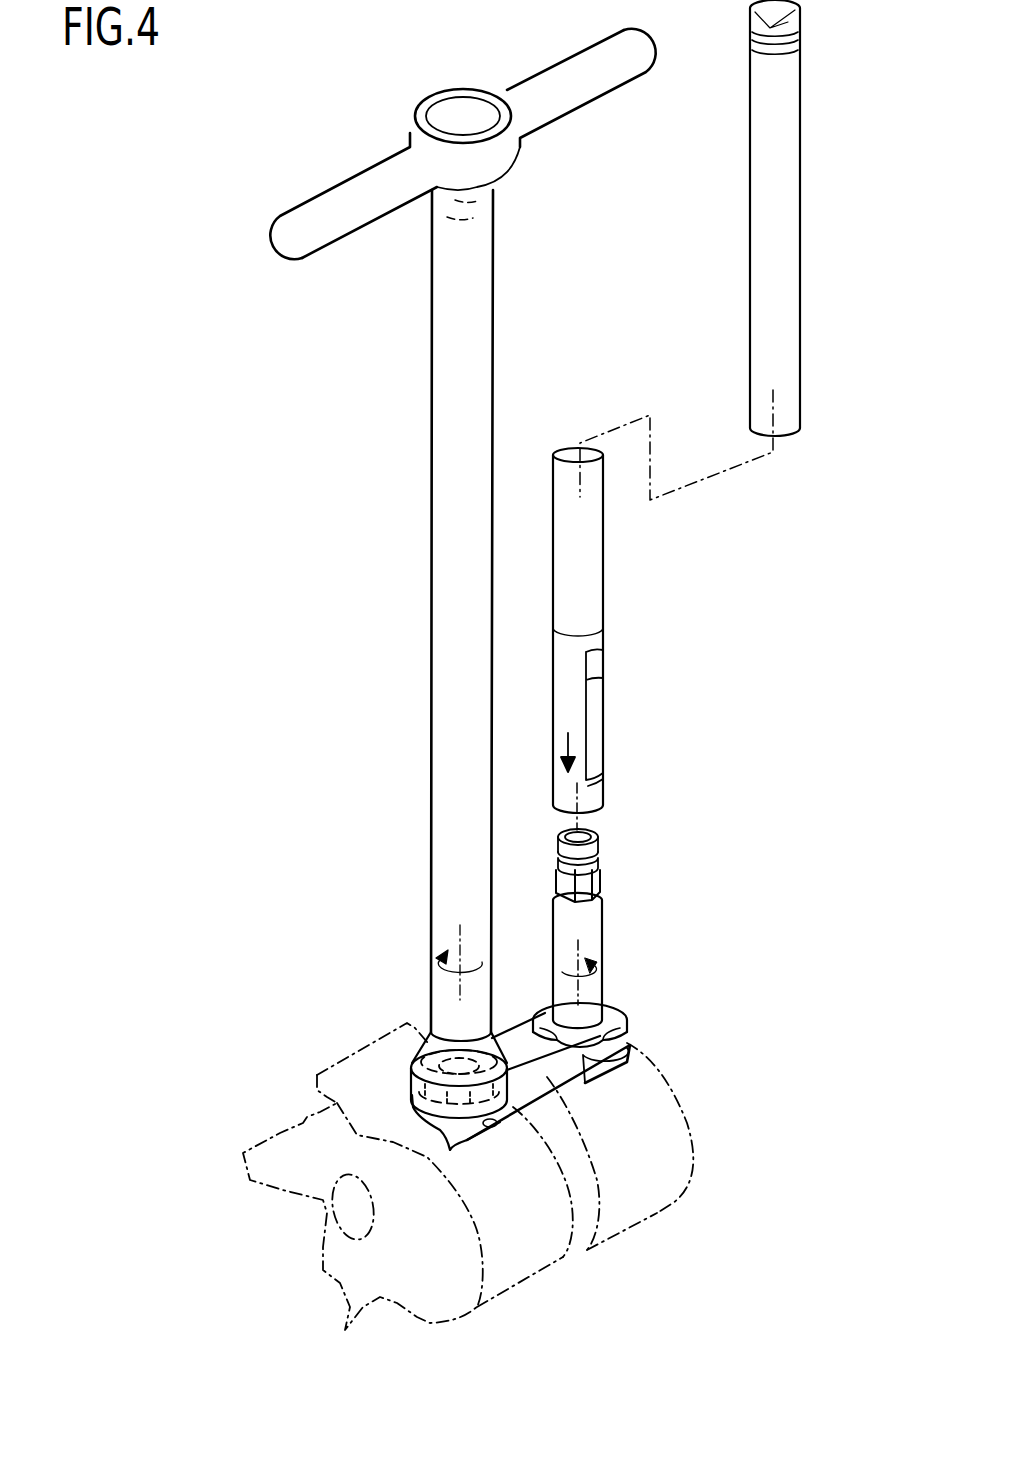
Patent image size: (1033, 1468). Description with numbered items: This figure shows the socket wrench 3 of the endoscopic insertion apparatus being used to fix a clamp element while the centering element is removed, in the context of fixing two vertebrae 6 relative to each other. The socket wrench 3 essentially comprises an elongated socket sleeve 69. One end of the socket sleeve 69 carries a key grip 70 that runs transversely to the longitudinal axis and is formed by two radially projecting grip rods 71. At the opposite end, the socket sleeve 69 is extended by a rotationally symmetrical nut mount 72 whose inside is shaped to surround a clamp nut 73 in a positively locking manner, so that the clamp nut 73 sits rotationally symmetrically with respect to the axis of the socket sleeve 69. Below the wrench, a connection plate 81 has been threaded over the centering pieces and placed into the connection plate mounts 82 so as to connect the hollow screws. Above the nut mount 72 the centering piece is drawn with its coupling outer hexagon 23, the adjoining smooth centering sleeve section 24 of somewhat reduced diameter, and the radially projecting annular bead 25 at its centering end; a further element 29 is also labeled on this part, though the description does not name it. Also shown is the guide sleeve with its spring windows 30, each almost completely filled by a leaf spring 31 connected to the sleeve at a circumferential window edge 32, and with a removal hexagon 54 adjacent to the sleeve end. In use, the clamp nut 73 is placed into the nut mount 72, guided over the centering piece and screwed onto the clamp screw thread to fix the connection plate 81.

The socket wrench 3 is at (400, 492).
The vertebrae 6 is at (633, 1205).
The coupling outer hexagon 23 is at (602, 875).
The centering sleeve section 24 is at (602, 865).
The annular bead 25 is at (600, 837).
The sleeve 29 is at (562, 900).
The spring windows 30 is at (603, 682).
The leaf spring 31 is at (593, 725).
The window edge 32 is at (603, 655).
The removal hexagon 54 is at (800, 27).
The socket sleeve 69 is at (430, 362).
The key grip 70 is at (383, 163).
The grip rods 71 is at (367, 203).
The nut mount 72 is at (410, 1060).
The clamp nut 73 is at (610, 1013).
The connection plate 81 is at (590, 1087).
The connection plate mounts 82 is at (490, 1127).